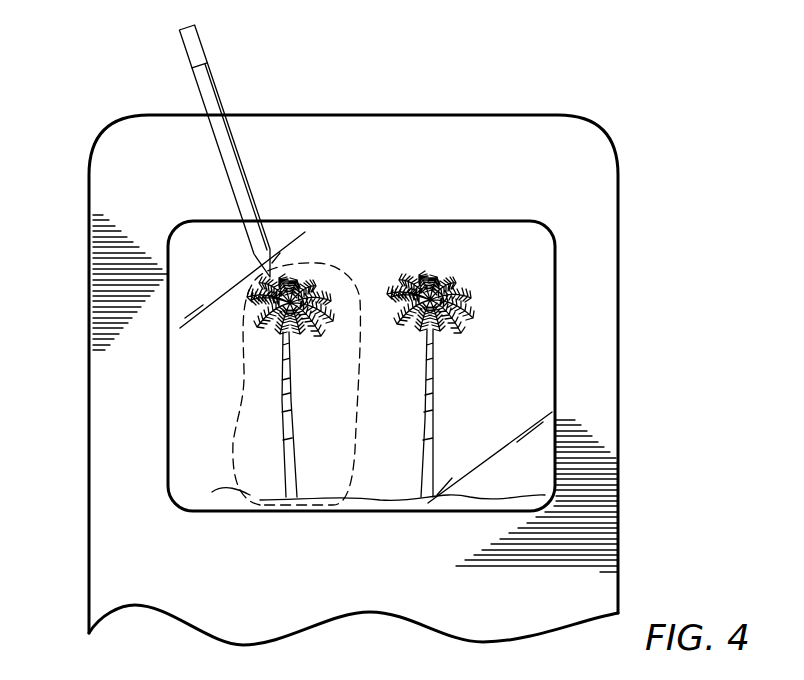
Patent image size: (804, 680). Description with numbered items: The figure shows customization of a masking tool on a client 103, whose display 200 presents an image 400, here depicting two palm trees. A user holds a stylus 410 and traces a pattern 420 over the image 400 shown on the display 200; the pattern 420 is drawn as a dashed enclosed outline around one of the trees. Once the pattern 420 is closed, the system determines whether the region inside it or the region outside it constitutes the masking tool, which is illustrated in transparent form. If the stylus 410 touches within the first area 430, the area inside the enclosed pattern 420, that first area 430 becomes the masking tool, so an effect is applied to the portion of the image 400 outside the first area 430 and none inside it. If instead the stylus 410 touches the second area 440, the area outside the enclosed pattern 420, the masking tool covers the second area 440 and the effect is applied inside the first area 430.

The client 103 is at (618, 190).
The display 200 is at (555, 302).
The image 400 is at (477, 360).
The stylus 410 is at (233, 163).
The pattern 420 is at (320, 265).
The first area 430 is at (260, 432).
The second area 440 is at (215, 386).